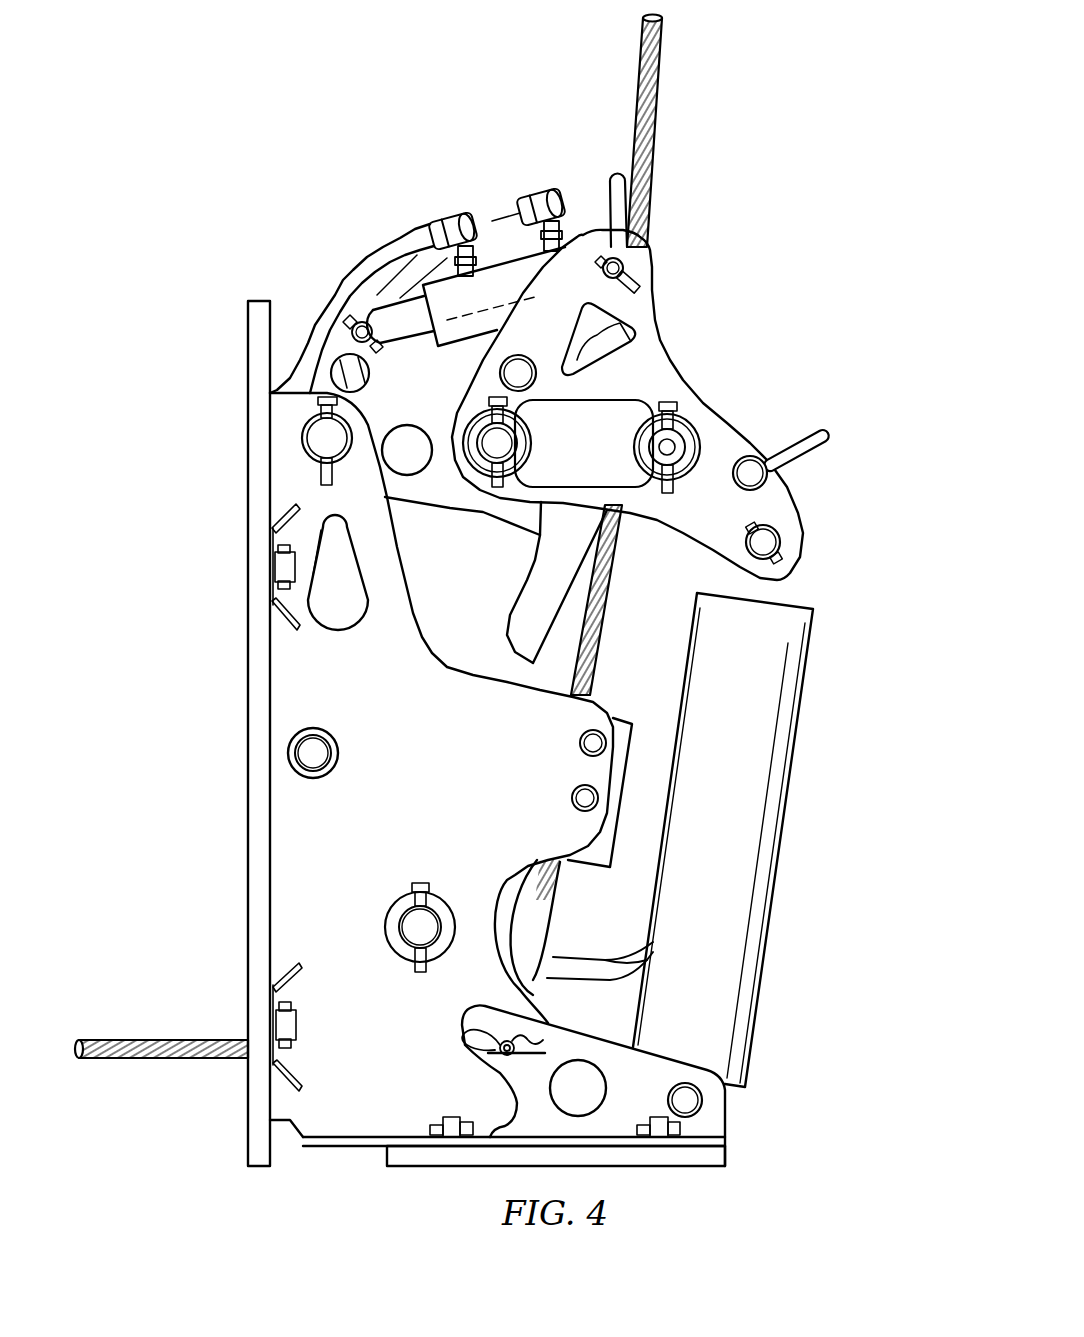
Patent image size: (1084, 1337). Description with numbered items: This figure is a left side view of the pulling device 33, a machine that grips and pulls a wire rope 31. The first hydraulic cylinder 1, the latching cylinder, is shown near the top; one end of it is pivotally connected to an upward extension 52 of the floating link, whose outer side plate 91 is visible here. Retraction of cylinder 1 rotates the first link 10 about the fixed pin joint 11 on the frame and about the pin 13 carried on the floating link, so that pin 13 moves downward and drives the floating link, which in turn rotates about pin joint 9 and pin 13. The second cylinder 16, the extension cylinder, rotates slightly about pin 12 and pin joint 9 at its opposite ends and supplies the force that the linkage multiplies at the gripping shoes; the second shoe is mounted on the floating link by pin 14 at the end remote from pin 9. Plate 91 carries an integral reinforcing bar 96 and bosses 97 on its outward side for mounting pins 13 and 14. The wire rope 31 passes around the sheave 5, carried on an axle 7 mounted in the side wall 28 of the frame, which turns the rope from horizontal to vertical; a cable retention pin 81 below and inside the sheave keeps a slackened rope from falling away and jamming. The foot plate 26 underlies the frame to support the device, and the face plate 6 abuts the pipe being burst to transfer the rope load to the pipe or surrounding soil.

The first hydraulic cylinder 1 is at (450, 357).
The sheave 5 is at (553, 938).
The face plate 6 is at (246, 627).
The axle 7 is at (410, 928).
The pin joint 9 is at (767, 541).
The first link 10 is at (452, 505).
The pin joint 11 is at (323, 447).
The pin 12 is at (667, 1096).
The pin 13 is at (503, 443).
The pin 14 is at (681, 455).
The second cylinder 16 is at (788, 822).
The foot plate 26 is at (422, 1167).
The side wall 28 is at (411, 774).
The wire rope 31 is at (634, 102).
The pulling device 33 is at (824, 311).
The upward extension 52 is at (655, 272).
The cable retention pin 81 is at (493, 1077).
The side plate 91 is at (663, 373).
The reinforcing bar 96 is at (617, 413).
The bosses 97 is at (703, 444).